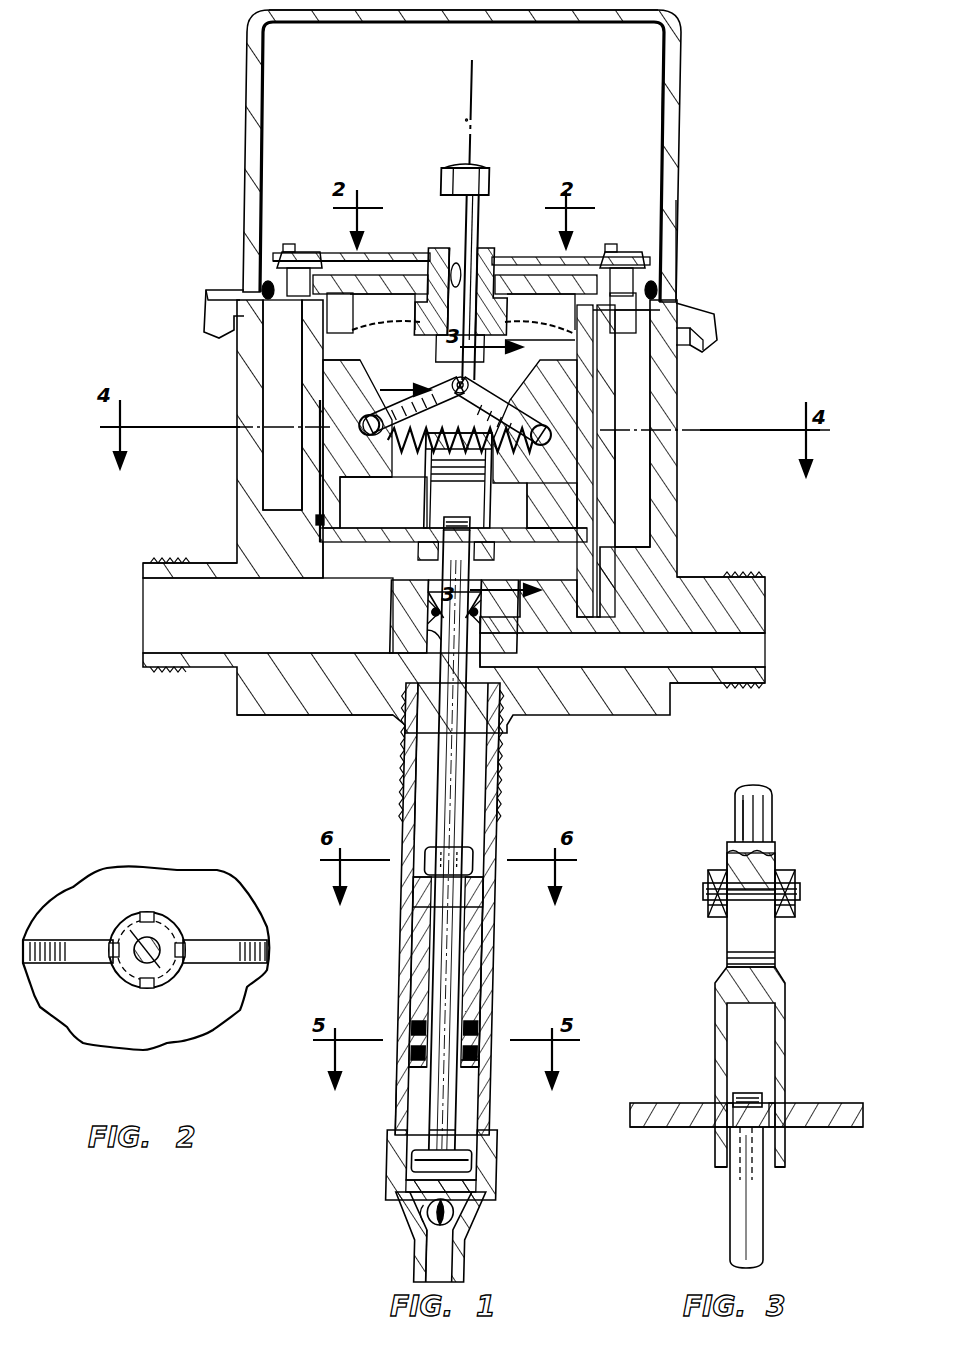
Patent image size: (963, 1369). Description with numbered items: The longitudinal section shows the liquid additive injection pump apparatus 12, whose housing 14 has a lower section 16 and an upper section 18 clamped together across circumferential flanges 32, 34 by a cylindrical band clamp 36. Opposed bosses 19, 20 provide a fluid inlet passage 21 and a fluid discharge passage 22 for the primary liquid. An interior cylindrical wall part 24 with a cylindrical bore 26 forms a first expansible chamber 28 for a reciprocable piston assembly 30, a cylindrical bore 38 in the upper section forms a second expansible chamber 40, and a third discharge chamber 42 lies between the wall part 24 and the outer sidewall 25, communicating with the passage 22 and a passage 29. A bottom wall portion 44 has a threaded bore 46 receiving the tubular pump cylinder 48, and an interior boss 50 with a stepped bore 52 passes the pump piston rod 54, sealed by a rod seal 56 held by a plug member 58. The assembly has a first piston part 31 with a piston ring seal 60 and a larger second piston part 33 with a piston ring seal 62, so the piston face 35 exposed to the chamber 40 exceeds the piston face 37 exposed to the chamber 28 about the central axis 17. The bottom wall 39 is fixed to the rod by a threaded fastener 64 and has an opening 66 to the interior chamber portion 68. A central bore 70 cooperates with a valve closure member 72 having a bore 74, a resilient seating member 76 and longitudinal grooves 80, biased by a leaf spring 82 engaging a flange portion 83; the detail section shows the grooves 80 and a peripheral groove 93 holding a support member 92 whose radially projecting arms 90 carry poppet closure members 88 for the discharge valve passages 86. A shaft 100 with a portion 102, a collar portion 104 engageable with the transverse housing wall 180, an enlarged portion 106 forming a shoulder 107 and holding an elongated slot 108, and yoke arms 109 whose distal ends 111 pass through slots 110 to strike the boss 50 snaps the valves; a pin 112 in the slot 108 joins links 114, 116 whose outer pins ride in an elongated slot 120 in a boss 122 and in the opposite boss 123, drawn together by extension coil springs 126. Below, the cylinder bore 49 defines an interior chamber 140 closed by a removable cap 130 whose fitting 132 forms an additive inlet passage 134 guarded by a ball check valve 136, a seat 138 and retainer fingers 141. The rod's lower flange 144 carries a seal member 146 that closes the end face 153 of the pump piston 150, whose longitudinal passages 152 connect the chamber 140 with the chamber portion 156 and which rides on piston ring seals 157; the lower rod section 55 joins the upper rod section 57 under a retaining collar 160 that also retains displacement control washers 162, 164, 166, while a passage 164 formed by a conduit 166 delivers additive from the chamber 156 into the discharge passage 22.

In FIG. 1, the liquid additive injection pump apparatus 12 is at (693, 24).
In FIG. 1, the housing 14 is at (678, 233).
In FIG. 1, the lower housing section 16 is at (676, 412).
In FIG. 1, the longitudinal central axis 17 is at (476, 92).
In FIG. 1, the upper housing section 18 is at (677, 100).
In FIG. 1, the inlet boss 19 is at (212, 563).
In FIG. 1, the discharge boss 20 is at (700, 577).
In FIG. 1, the fluid inlet passage 21 is at (150, 630).
In FIG. 1, the fluid discharge passage 22 is at (706, 667).
In FIG. 1, the interior cylindrical wall part 24 is at (605, 452).
In FIG. 1, the outer cylindrical sidewall 25 is at (690, 426).
In FIG. 1, the cylindrical bore 26 is at (612, 482).
In FIG. 1, the first expansible chamber 28 is at (453, 551).
In FIG. 1, the passage 29 is at (640, 535).
In FIG. 1, the reciprocable piston assembly 30 is at (588, 385).
In FIG. 3, the reciprocable piston assembly 30 is at (812, 1130).
In FIG. 1, the first piston part 31 is at (330, 436).
In FIG. 1, the circumferential flange 32 is at (704, 344).
In FIG. 1, the second piston part 33 is at (342, 262).
In FIG. 2, the second piston part 33 is at (96, 880).
In FIG. 1, the circumferential flange 34 is at (690, 310).
In FIG. 1, the piston face 35 is at (396, 256).
In FIG. 1, the cylindrical band clamp 36 is at (717, 338).
In FIG. 1, the piston face 37 is at (345, 542).
In FIG. 1, the cylindrical bore 38 is at (668, 98).
In FIG. 1, the bottom wall 39 is at (535, 540).
In FIG. 3, the bottom wall 39 is at (832, 1100).
In FIG. 1, the second expansible chamber 40 is at (450, 91).
In FIG. 1, the third expansible fluid discharge chamber 42 is at (632, 428).
In FIG. 1, the bottom wall portion 44 is at (294, 712).
In FIG. 1, the threaded bore 46 is at (408, 752).
In FIG. 1, the additive injection pump cylinder 48 is at (510, 784).
In FIG. 1, the longitudinal bore 49 is at (484, 934).
In FIG. 1, the interior cylindrical boss 50 is at (398, 608).
In FIG. 1, the stepped bore 52 is at (398, 634).
In FIG. 1, the pump piston rod 54 is at (478, 665).
In FIG. 3, the pump piston rod 54 is at (730, 1212).
In FIG. 1, the separable rod section 55 is at (432, 932).
In FIG. 1, the piston rod seal 56 is at (500, 610).
In FIG. 1, the upper rod section 57 is at (430, 770).
In FIG. 1, the removable plug member 58 is at (490, 592).
In FIG. 1, the piston ring seal 60 is at (322, 518).
In FIG. 1, the piston ring seal 62 is at (244, 285).
In FIG. 1, the threaded fastener 64 is at (452, 520).
In FIG. 3, the threaded fastener 64 is at (754, 1092).
In FIG. 1, the opening 66 is at (360, 526).
In FIG. 1, the interior chamber portion 68 is at (346, 380).
In FIG. 1, the central bore 70 is at (436, 240).
In FIG. 1, the movable valve closure member 72 is at (505, 266).
In FIG. 2, the movable valve closure member 72 is at (172, 920).
In FIG. 1, the central longitudinal bore 74 is at (450, 248).
In FIG. 1, the resilient seating member 76 is at (428, 302).
In FIG. 1, the longitudinal grooves 80 is at (425, 262).
In FIG. 2, the longitudinal grooves 80 is at (146, 912).
In FIG. 1, the leaf spring 82 is at (522, 330).
In FIG. 1, the axially projecting flange portion 83 is at (330, 376).
In FIG. 1, the fluid discharge valve passages 86 is at (262, 282).
In FIG. 1, the poppet type valve closure members 88 is at (290, 246).
In FIG. 1, the radially projecting arms 90 is at (328, 250).
In FIG. 2, the radially projecting arms 90 is at (86, 942).
In FIG. 2, the support member 92 is at (175, 982).
In FIG. 2, the peripheral groove 93 is at (124, 1002).
In FIG. 1, the elongated cylindrical shaft 100 is at (419, 382).
In FIG. 3, the elongated cylindrical shaft 100 is at (780, 855).
In FIG. 1, the shaft portion 102 is at (482, 200).
In FIG. 3, the shaft portion 102 is at (775, 804).
In FIG. 1, the transverse collar portion 104 is at (478, 168).
In FIG. 3, the enlarged diameter portion 106 is at (727, 864).
In FIG. 1, the transverse shoulder 107 is at (505, 314).
In FIG. 3, the transverse shoulder 107 is at (743, 830).
In FIG. 1, the elongated slot 108 is at (452, 452).
In FIG. 3, the elongated slot 108 is at (775, 958).
In FIG. 1, the axially extending arms 109 is at (496, 496).
In FIG. 3, the axially extending arms 109 is at (715, 1015).
In FIG. 3, the slots 110 is at (775, 1112).
In FIG. 1, the distal ends 111 is at (422, 562).
In FIG. 3, the distal ends 111 is at (716, 1170).
In FIG. 3, the pin 112 is at (760, 905).
In FIG. 1, the links 114 is at (360, 401).
In FIG. 3, the links 114 is at (708, 878).
In FIG. 1, the links 116 is at (490, 386).
In FIG. 3, the links 116 is at (720, 918).
In FIG. 1, the elongated slot 120 is at (368, 428).
In FIG. 1, the boss 122 is at (383, 478).
In FIG. 1, the boss 123 is at (545, 528).
In FIG. 1, the extension coil springs 126 is at (412, 438).
In FIG. 1, the removable cap 130 is at (410, 1182).
In FIG. 1, the fitting 132 is at (470, 1256).
In FIG. 1, the liquid additive inlet passage 134 is at (440, 1258).
In FIG. 1, the ball type check valve 136 is at (478, 1208).
In FIG. 1, the seat 138 is at (440, 1210).
In FIG. 1, the interior chamber 140 is at (414, 1104).
In FIG. 1, the retainer fingers 141 is at (410, 1183).
In FIG. 1, the lower transverse flange 144 is at (494, 1160).
In FIG. 1, the circumferential seal member 146 is at (476, 1148).
In FIG. 1, the additive injection pump piston 150 is at (492, 1030).
In FIG. 1, the longitudinal passages 152 is at (430, 1065).
In FIG. 1, the lower transverse end face 153 is at (484, 1064).
In FIG. 1, the chamber portion 156 is at (500, 752).
In FIG. 1, the piston ring seals 157 is at (436, 1030).
In FIG. 1, the resilient retaining collar 160 is at (436, 848).
In FIG. 1, the displacement control washer 162 is at (432, 880).
In FIG. 1, the displacement control washer 164 is at (530, 660).
In FIG. 1, the displacement control washer 166 is at (628, 620).
In FIG. 1, the transverse housing wall 180 is at (607, 24).